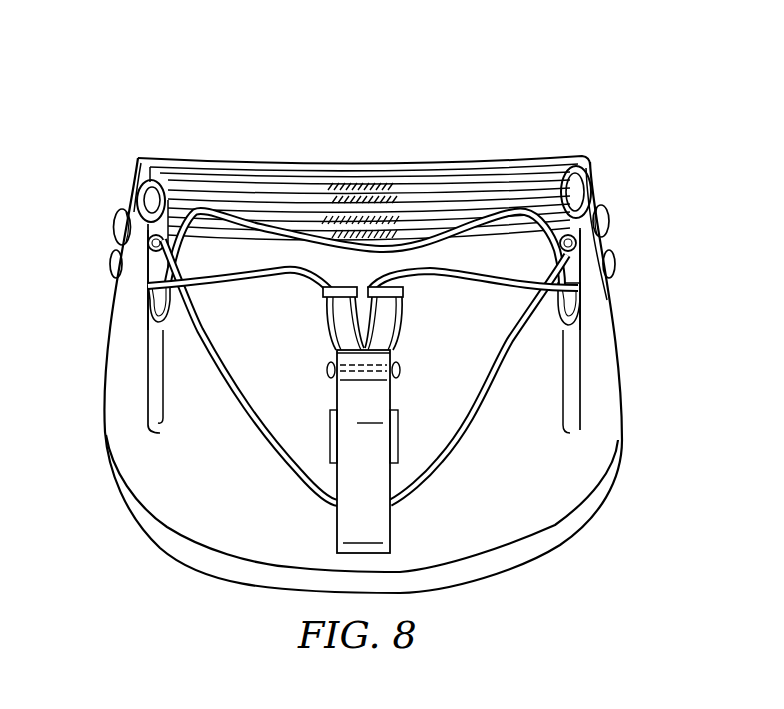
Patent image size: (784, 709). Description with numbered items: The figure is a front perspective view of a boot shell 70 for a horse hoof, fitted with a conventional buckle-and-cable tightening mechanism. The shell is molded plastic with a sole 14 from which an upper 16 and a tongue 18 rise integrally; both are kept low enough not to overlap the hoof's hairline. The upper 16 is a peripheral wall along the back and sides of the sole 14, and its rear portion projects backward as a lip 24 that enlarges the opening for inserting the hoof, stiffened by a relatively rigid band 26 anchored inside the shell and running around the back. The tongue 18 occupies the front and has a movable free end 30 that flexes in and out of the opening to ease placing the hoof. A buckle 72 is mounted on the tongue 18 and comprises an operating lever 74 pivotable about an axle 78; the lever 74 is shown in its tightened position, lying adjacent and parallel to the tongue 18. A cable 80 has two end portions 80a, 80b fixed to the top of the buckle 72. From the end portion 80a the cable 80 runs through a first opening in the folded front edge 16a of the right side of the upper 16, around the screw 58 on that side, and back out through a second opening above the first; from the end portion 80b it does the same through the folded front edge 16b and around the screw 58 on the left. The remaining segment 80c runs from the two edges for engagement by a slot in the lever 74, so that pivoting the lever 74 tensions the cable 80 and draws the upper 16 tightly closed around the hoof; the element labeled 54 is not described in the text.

The boot shell 70 is at (521, 85).
The tongue 18 is at (255, 216).
The lip 24 is at (310, 166).
The rigid band 26 is at (417, 182).
The free end 30 is at (485, 240).
The screw 58 is at (114, 224).
The fastener button 54 is at (111, 263).
The folded front edge 16a is at (153, 350).
The folded front edge 16b is at (568, 350).
The upper 16 is at (92, 388).
The end portion 80a is at (278, 284).
The end portion 80b is at (458, 284).
The cable segment 80c is at (466, 430).
The cable 80 is at (261, 441).
The axle 78 is at (327, 369).
The buckle 72 is at (414, 387).
The operating lever 74 is at (393, 518).
The sole 14 is at (163, 530).